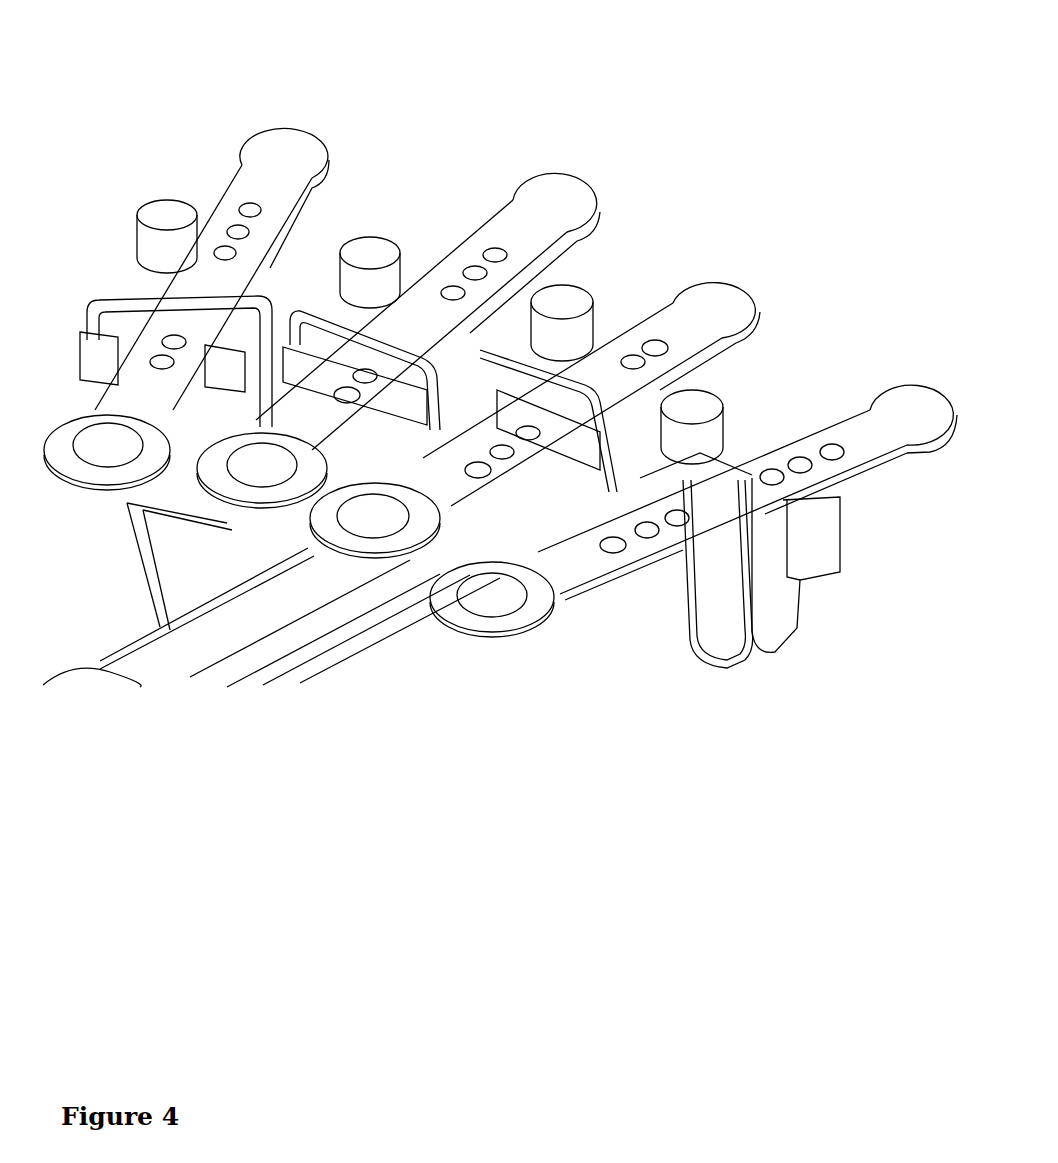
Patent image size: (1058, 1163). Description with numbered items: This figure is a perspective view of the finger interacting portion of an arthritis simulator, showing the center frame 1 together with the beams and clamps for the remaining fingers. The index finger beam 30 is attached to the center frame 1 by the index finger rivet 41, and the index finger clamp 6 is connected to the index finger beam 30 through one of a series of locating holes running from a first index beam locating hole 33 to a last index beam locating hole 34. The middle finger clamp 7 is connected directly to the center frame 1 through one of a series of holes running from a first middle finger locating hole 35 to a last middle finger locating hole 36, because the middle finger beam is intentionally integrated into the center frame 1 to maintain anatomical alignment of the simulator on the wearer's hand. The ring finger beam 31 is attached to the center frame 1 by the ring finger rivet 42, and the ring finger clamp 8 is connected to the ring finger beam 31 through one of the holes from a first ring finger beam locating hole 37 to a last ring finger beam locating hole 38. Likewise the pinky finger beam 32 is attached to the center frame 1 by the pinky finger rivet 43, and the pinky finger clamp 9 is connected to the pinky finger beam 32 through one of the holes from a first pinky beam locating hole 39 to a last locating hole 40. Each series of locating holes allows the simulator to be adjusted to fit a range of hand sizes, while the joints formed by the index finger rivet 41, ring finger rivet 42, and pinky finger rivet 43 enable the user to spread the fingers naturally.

The center frame 1 is at (727, 280).
The index finger clamp 6 is at (763, 663).
The middle finger clamp 7 is at (607, 340).
The ring finger clamp 8 is at (417, 297).
The pinky finger clamp 9 is at (118, 250).
The index finger beam 30 is at (870, 410).
The ring finger beam 31 is at (562, 170).
The pinky finger beam 32 is at (253, 130).
The first index beam locating hole 33 is at (832, 462).
The last index beam locating hole 34 is at (620, 557).
The first middle finger locating hole 35 is at (655, 340).
The last middle finger locating hole 36 is at (480, 483).
The first ring finger beam locating hole 37 is at (495, 242).
The last ring finger beam locating hole 38 is at (348, 403).
The first pinky beam locating hole 39 is at (241, 205).
The last index beam locating hole 40 is at (162, 372).
The index finger rivet 41 is at (490, 597).
The ring finger rivet 42 is at (260, 470).
The pinky finger rivet 43 is at (110, 448).